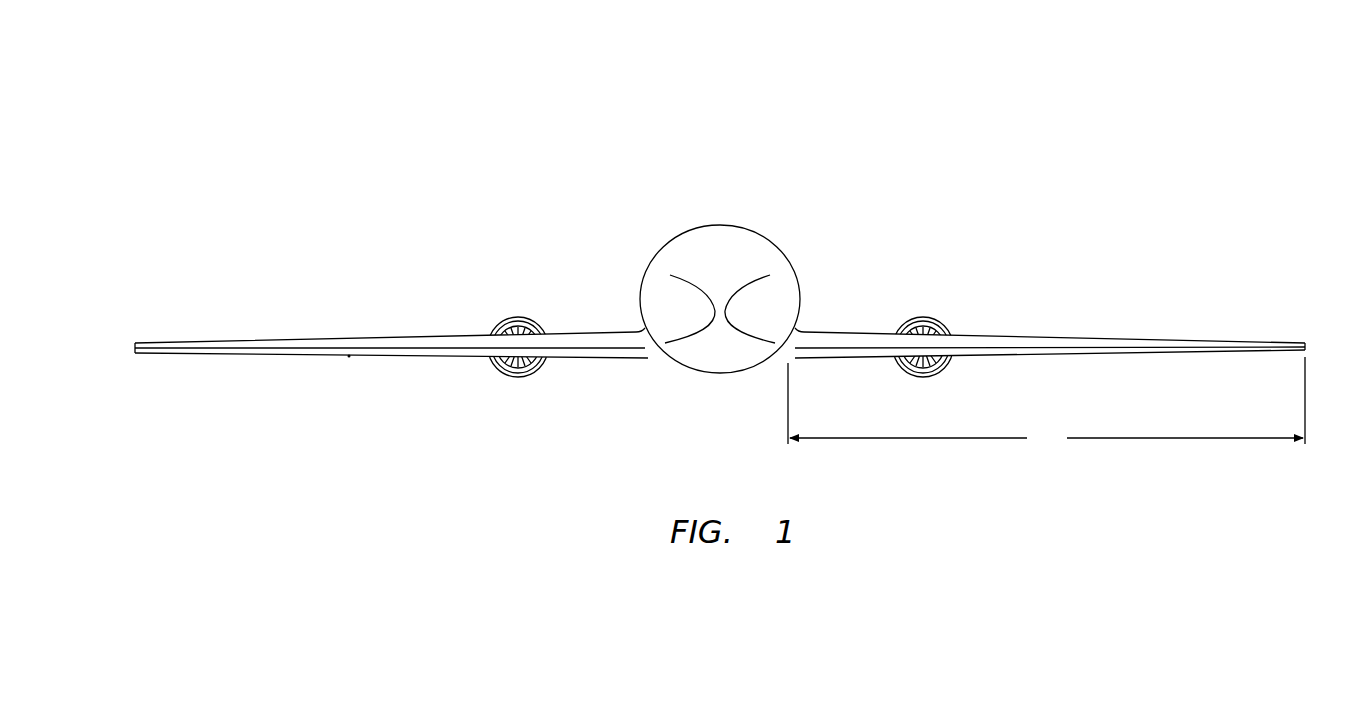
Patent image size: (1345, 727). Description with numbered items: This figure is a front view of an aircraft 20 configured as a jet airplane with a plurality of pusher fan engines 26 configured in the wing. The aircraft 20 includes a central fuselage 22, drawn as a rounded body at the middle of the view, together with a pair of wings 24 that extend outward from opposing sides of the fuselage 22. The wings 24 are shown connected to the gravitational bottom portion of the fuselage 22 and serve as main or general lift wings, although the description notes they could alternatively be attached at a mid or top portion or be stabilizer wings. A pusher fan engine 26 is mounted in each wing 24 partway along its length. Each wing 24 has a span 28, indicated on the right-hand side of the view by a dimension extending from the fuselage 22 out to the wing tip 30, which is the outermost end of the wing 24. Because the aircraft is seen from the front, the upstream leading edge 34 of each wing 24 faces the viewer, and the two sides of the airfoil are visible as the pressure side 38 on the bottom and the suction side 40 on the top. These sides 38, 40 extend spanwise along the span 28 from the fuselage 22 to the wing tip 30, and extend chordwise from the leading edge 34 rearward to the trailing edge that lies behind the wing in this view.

The aircraft 20 is at (1190, 120).
The fuselage 22 is at (736, 226).
The wing 24 is at (290, 367).
The pusher fan engine 26 is at (518, 384).
The span 28 is at (1046, 405).
The wing tip 30 is at (132, 348).
The leading edge 34 is at (235, 352).
The pressure side 38 is at (372, 358).
The suction side 40 is at (362, 340).